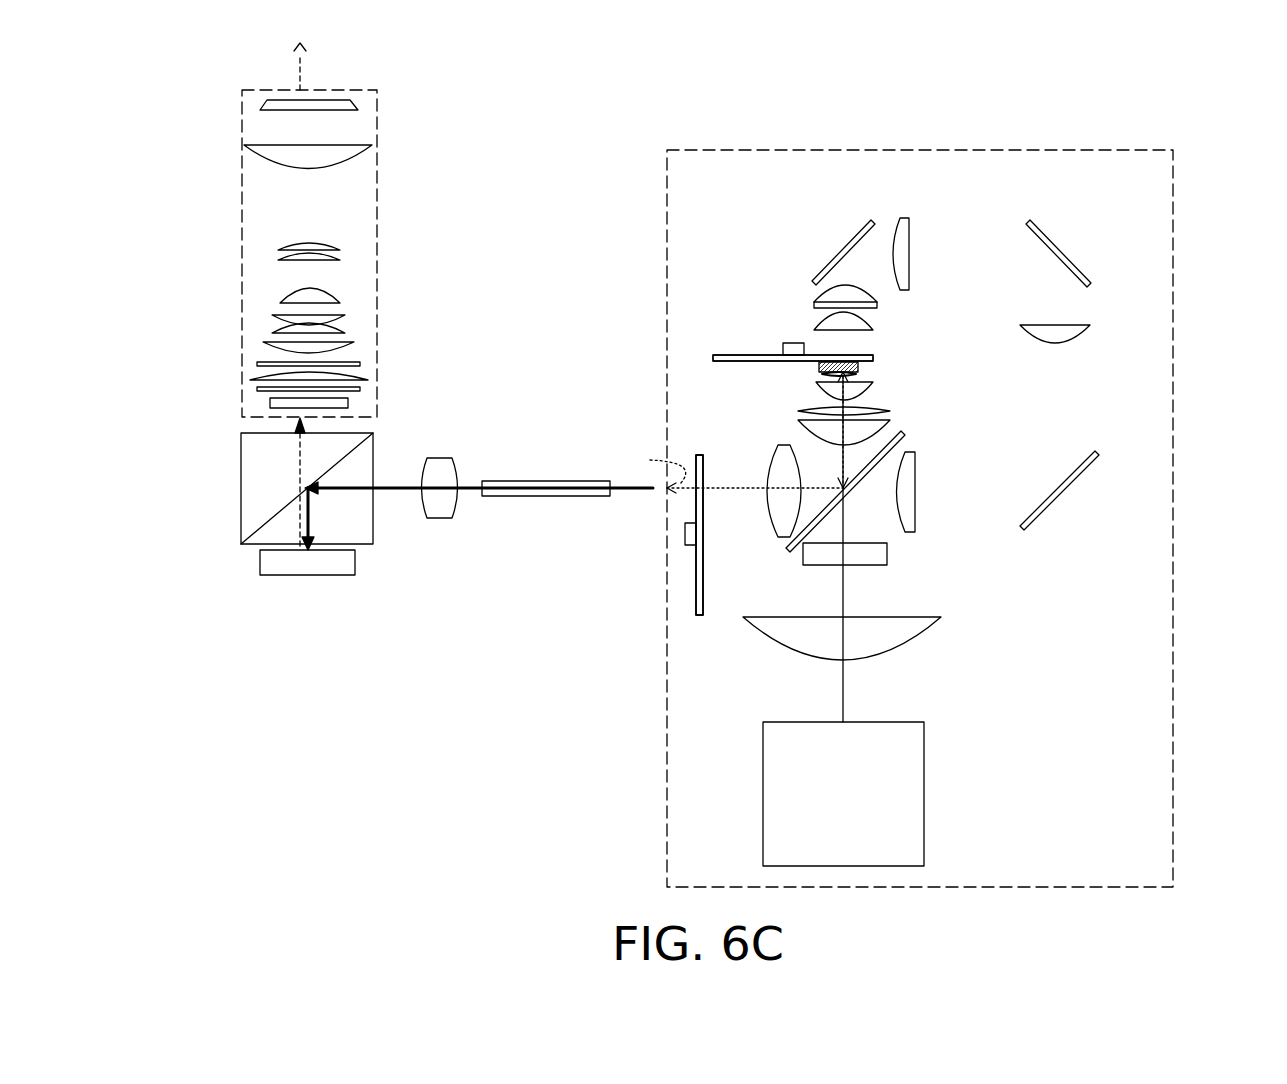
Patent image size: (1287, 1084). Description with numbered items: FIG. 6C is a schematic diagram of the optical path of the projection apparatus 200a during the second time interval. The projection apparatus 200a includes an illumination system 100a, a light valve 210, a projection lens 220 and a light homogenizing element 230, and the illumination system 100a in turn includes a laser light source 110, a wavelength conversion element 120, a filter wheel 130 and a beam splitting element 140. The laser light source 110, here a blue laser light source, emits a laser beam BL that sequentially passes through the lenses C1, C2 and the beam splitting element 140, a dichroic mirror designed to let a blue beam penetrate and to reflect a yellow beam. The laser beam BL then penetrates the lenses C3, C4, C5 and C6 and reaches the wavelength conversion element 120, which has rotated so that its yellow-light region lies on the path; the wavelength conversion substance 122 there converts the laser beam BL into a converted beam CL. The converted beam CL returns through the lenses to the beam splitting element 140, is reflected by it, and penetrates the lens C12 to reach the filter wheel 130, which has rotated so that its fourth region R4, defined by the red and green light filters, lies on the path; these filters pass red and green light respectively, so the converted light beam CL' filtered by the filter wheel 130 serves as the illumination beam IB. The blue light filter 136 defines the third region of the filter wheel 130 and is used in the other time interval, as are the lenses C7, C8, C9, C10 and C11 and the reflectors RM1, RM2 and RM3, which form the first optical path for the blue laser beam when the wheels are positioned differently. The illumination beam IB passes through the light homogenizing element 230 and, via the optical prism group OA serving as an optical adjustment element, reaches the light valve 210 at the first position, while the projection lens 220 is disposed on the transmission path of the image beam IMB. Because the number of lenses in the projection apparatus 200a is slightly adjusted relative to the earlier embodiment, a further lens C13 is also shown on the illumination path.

The projection lens 220 is at (242, 265).
The image beam IMB is at (297, 62).
The light valve 210 is at (268, 562).
The optical prism group OA is at (292, 533).
The lens C13 is at (441, 510).
The light homogenizing element 230 is at (538, 497).
The illumination beam IB is at (635, 492).
The filtered converted light beam CL' is at (648, 471).
The converted beam CL is at (757, 462).
The illumination system 100a is at (1175, 200).
The filter wheel 130 is at (705, 618).
The blue light filter 136 is at (700, 455).
The fourth region R4 is at (697, 593).
The wavelength conversion element 120 is at (727, 347).
The wavelength conversion substance 122 is at (820, 368).
The lens C6 is at (862, 374).
The lens C5 is at (862, 391).
The lens C4 is at (870, 409).
The lens C3 is at (868, 429).
The lens C8 is at (817, 294).
The lens C7 is at (818, 321).
The reflector RM1 is at (845, 250).
The lens C9 is at (905, 228).
The reflector RM2 is at (1054, 241).
The lens C10 is at (1072, 334).
The lens C12 is at (788, 456).
The beam splitting element 140 is at (790, 549).
The lens C11 is at (912, 511).
The lens C2 is at (888, 556).
The laser beam BL is at (848, 586).
The lens C1 is at (914, 634).
The reflector RM3 is at (1045, 511).
The laser light source 110 is at (925, 796).
The projection apparatus 200a is at (1286, 914).